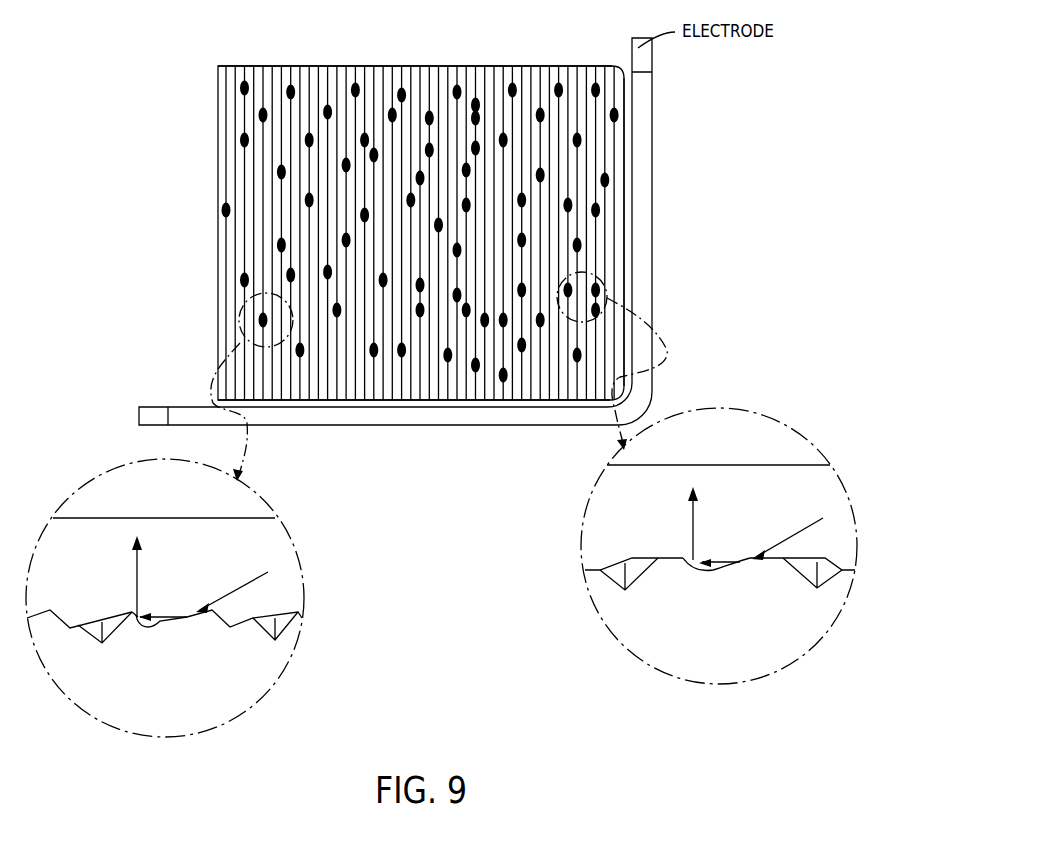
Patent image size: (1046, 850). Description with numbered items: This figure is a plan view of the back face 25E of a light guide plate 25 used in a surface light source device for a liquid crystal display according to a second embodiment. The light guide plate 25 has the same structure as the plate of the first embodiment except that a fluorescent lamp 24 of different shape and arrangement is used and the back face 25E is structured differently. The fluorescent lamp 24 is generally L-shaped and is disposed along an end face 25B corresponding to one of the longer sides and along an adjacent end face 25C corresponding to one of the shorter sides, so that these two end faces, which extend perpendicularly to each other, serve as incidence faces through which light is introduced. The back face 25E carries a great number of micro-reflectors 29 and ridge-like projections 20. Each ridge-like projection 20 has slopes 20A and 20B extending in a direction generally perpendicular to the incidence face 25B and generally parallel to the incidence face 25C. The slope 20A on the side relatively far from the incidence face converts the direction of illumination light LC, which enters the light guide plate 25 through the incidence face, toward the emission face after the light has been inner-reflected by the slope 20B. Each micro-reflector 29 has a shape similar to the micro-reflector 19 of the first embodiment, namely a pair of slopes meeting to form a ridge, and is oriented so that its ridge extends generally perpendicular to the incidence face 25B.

The light guide plate 25 is at (395, 65).
The back face 25E is at (488, 77).
The end face 25B is at (430, 400).
The end face 25C is at (625, 262).
The micro-reflector 29 is at (226, 210).
The fluorescent lamp 24 is at (640, 160).
The micro-reflector 19 is at (90, 643).
The ridge-like projection 20 is at (160, 652).
The slope 20A is at (138, 625).
The slope 20B is at (183, 622).
The illumination light LC is at (138, 572).